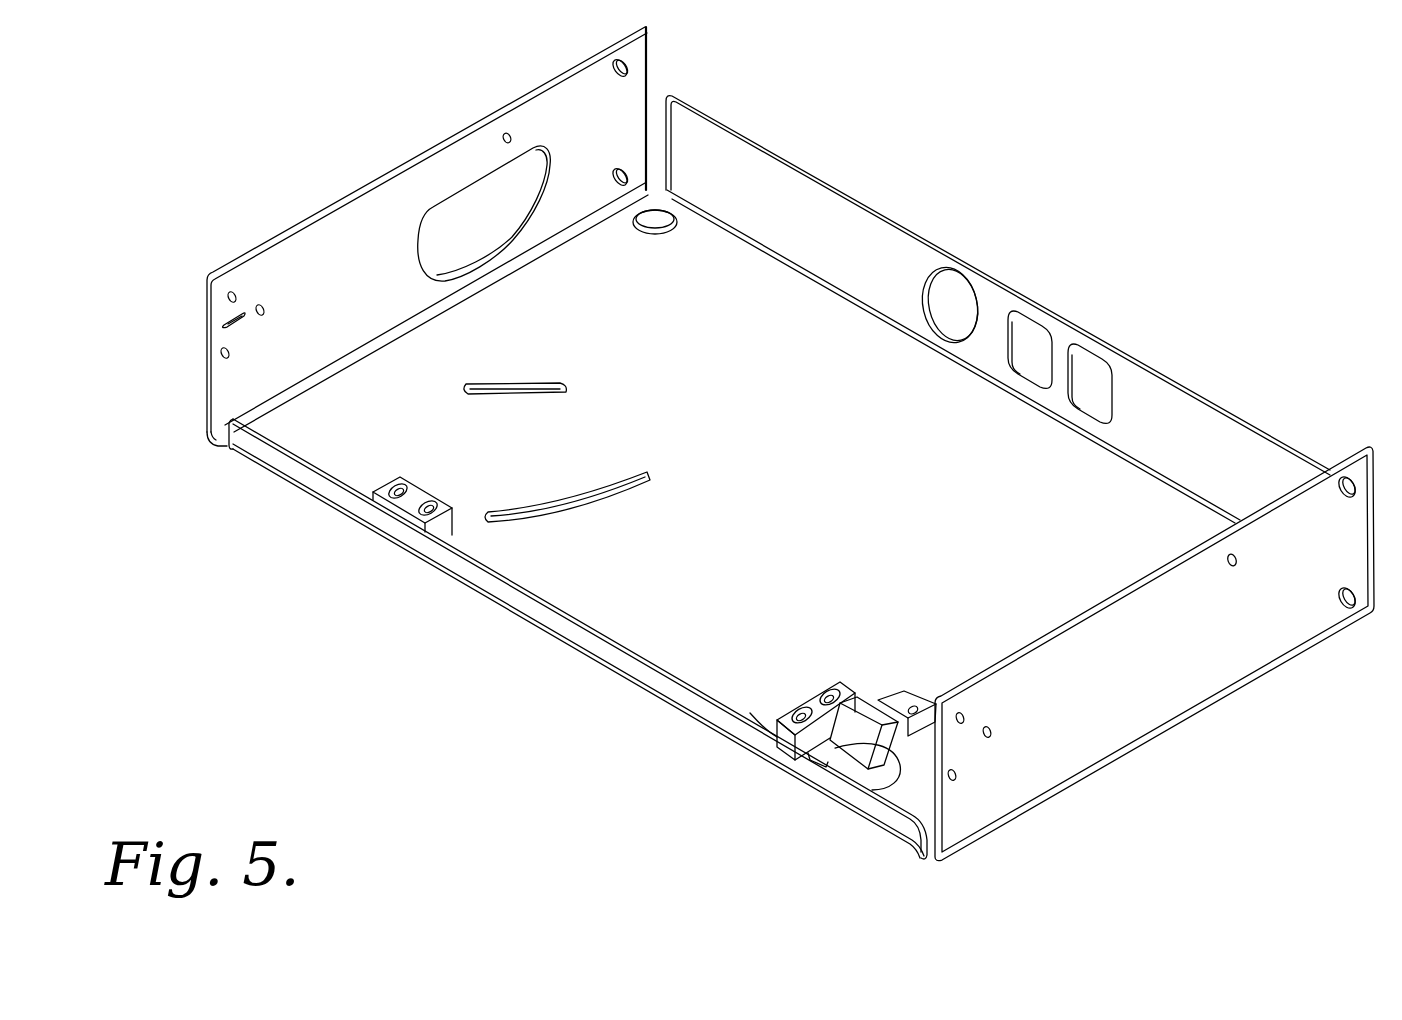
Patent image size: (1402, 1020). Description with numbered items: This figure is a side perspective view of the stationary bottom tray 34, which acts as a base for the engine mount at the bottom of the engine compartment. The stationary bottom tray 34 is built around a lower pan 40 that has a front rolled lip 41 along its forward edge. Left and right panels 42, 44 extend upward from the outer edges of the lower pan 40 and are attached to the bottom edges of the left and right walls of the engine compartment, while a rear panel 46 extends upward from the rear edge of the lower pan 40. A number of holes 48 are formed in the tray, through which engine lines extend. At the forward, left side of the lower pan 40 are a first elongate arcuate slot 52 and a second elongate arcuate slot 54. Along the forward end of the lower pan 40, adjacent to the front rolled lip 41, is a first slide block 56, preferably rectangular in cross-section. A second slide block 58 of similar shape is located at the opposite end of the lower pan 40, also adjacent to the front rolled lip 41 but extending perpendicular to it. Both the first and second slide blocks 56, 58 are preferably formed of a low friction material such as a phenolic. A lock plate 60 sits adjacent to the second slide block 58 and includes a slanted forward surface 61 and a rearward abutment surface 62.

The stationary bottom tray 34 is at (1295, 198).
The lower pan 40 is at (852, 490).
The front rolled lip 41 is at (476, 566).
The left panel 42 is at (350, 217).
The right panel 44 is at (1167, 657).
The rear panel 46 is at (808, 195).
The holes 48 is at (478, 178).
The first elongate arcuate slot 52 is at (520, 380).
The second elongate arcuate slot 54 is at (575, 497).
The first slide block 56 is at (386, 504).
The second slide block 58 is at (807, 695).
The lock plate 60 is at (862, 800).
The slanted forward surface 61 is at (860, 743).
The rearward abutment surface 62 is at (878, 698).